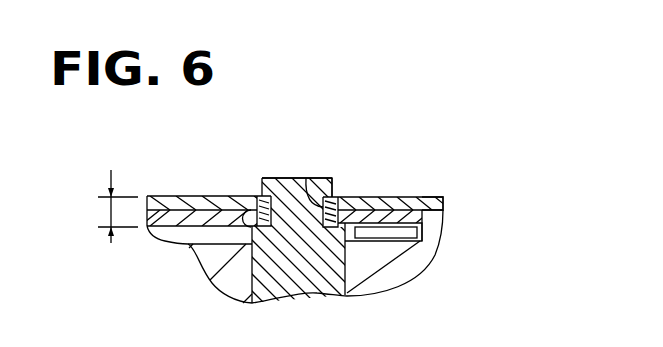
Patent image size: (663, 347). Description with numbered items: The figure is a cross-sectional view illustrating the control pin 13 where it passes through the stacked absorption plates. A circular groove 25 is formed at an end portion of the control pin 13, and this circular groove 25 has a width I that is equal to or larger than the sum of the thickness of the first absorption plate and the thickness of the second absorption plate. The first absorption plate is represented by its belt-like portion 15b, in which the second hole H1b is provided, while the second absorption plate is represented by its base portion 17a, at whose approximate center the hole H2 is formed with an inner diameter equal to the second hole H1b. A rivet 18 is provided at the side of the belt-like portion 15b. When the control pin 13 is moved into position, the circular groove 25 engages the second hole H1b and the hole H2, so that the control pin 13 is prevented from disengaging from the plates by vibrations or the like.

The control pin 13 is at (361, 134).
The belt-like portion 15b is at (401, 195).
The base portion 17a is at (428, 196).
The rivet 18 is at (363, 230).
The circular groove 25 is at (257, 195).
The hole H2 is at (301, 178).
The second hole H1b is at (332, 190).
The width I is at (110, 206).